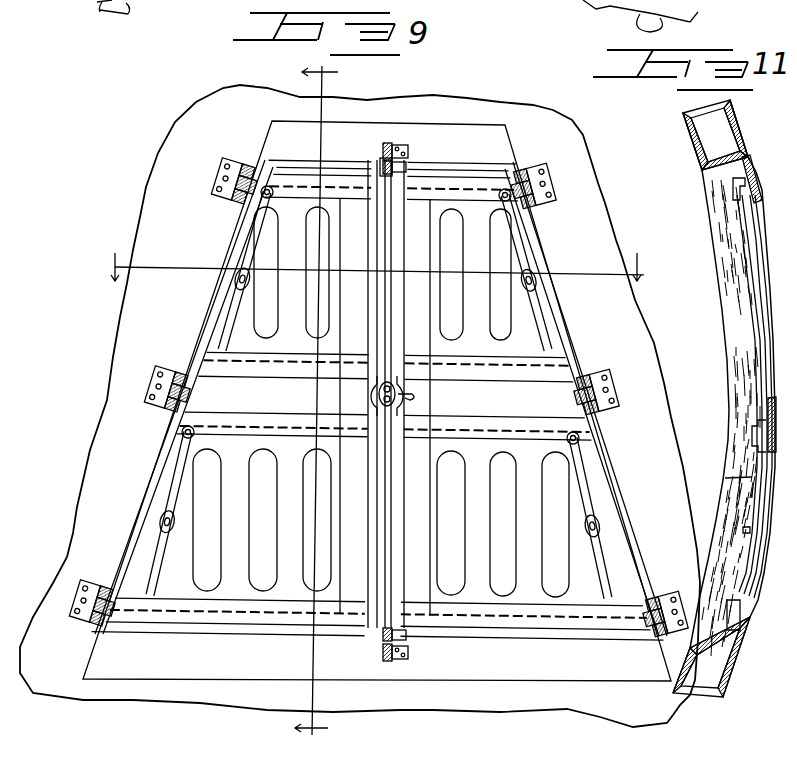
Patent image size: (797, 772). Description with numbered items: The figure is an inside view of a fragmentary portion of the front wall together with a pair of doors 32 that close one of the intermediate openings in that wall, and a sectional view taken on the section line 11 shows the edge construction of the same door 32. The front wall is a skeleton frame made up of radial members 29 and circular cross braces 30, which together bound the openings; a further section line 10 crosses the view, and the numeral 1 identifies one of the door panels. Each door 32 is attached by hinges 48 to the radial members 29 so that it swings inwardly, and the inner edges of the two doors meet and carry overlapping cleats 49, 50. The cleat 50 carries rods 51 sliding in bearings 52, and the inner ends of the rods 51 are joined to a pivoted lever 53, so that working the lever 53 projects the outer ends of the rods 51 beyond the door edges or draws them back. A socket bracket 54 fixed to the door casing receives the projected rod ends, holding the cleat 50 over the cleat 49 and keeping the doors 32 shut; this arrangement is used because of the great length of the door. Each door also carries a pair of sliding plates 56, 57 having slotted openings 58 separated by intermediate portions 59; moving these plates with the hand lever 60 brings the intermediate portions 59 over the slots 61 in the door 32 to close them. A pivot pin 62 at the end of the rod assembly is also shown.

In FIG. 9, the tailgate panel 1 is at (381, 399).
In FIG. 9, the section line 10- 10 is at (373, 261).
In FIG. 9, the section line 11— 11 is at (296, 402).
In FIG. 9, the radial members 29 is at (135, 348).
In FIG. 9, the circular cross braces 30 is at (377, 401).
In FIG. 11, the circular cross braces 30 is at (730, 687).
In FIG. 9, the doors 32 is at (383, 417).
In FIG. 9, the hinges 48 is at (213, 197).
In FIG. 9, the overlapping cleat 49 is at (367, 385).
In FIG. 9, the overlapping cleat 50 is at (390, 484).
In FIG. 9, the rods 51 is at (390, 247).
In FIG. 9, the bearings 52 is at (372, 633).
In FIG. 9, the pivoted lever 53 is at (410, 399).
In FIG. 9, the socket bracket 54 is at (410, 152).
In FIG. 9, the sliding plate 56 is at (304, 272).
In FIG. 9, the sliding plate 57 is at (304, 520).
In FIG. 9, the slotted openings 58 is at (262, 399).
In FIG. 9, the intermediate portions 59 is at (218, 520).
In FIG. 9, the hand lever 60 is at (230, 311).
In FIG. 11, the hand lever 60 is at (757, 310).
In FIG. 9, the slots 61 is at (499, 245).
In FIG. 9, the pivot pin 62 is at (382, 160).